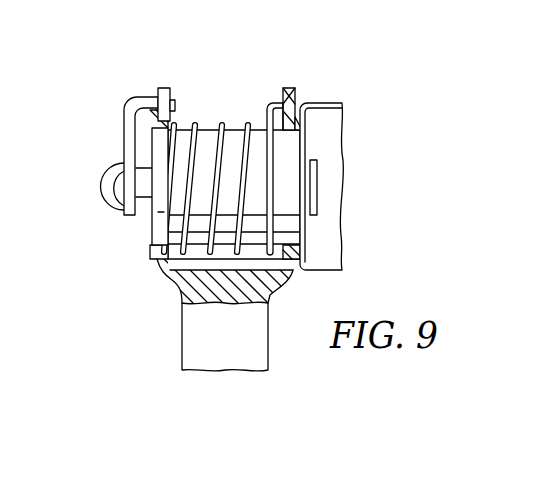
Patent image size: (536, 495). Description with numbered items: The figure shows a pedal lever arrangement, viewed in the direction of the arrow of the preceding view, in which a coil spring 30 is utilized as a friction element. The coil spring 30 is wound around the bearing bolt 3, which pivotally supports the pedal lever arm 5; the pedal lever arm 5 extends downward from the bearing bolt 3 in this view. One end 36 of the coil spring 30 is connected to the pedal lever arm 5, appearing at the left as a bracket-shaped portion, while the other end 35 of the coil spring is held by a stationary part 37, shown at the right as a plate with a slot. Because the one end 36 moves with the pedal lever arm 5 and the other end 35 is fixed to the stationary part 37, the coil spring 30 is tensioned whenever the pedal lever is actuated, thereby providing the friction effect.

The bearing bolt 3 is at (160, 155).
The pedal lever arm 5 is at (202, 343).
The coil spring 30 is at (195, 124).
The other end of the coil spring 35 is at (288, 88).
The one end of the coil spring 36 is at (125, 119).
The stationary part 37 is at (320, 123).